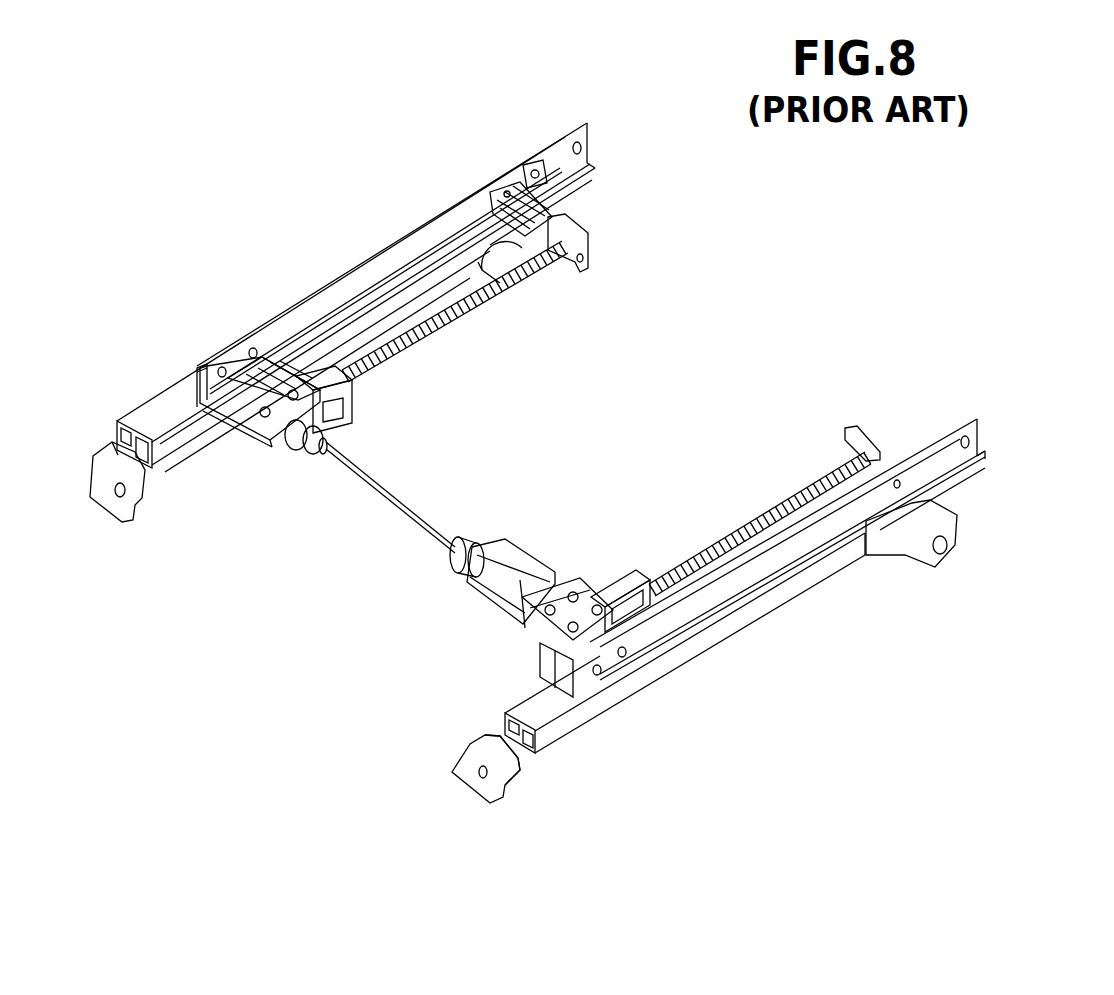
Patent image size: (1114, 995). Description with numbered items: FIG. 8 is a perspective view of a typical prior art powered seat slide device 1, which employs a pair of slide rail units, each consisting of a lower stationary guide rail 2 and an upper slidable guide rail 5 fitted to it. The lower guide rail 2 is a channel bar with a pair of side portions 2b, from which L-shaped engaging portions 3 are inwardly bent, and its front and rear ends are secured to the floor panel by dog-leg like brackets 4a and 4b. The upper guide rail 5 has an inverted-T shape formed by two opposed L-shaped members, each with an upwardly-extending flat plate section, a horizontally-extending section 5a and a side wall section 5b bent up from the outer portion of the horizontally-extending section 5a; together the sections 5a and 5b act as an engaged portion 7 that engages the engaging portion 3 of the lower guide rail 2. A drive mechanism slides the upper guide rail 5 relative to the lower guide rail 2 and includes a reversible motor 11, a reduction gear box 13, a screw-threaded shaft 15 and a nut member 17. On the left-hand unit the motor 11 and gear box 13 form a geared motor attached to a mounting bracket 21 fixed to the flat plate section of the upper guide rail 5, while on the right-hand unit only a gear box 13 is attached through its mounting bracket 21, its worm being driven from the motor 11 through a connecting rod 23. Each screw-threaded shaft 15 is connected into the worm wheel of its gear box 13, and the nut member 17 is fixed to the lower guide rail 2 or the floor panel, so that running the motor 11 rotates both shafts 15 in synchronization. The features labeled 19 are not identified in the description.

The powered seat slide device 1 is at (176, 259).
The lower stationary guide rail 2 is at (197, 417).
The side portions 2b is at (733, 623).
The engaging portions 3 is at (92, 498).
The bracket 4a is at (467, 767).
The bracket 4b is at (927, 560).
The upper slidable guide rail 5 is at (313, 300).
The horizontally-extending section 5a is at (583, 182).
The side wall section 5b is at (567, 197).
The engaged portion 7 is at (515, 221).
The reversible motor 11 is at (483, 590).
The reduction gear box 13 is at (547, 657).
The screw-threaded shaft 15 is at (460, 323).
The nut member 17 is at (352, 403).
The mounting holes 19 is at (600, 672).
The mounting bracket 21 is at (240, 395).
The connecting rod 23 is at (373, 495).